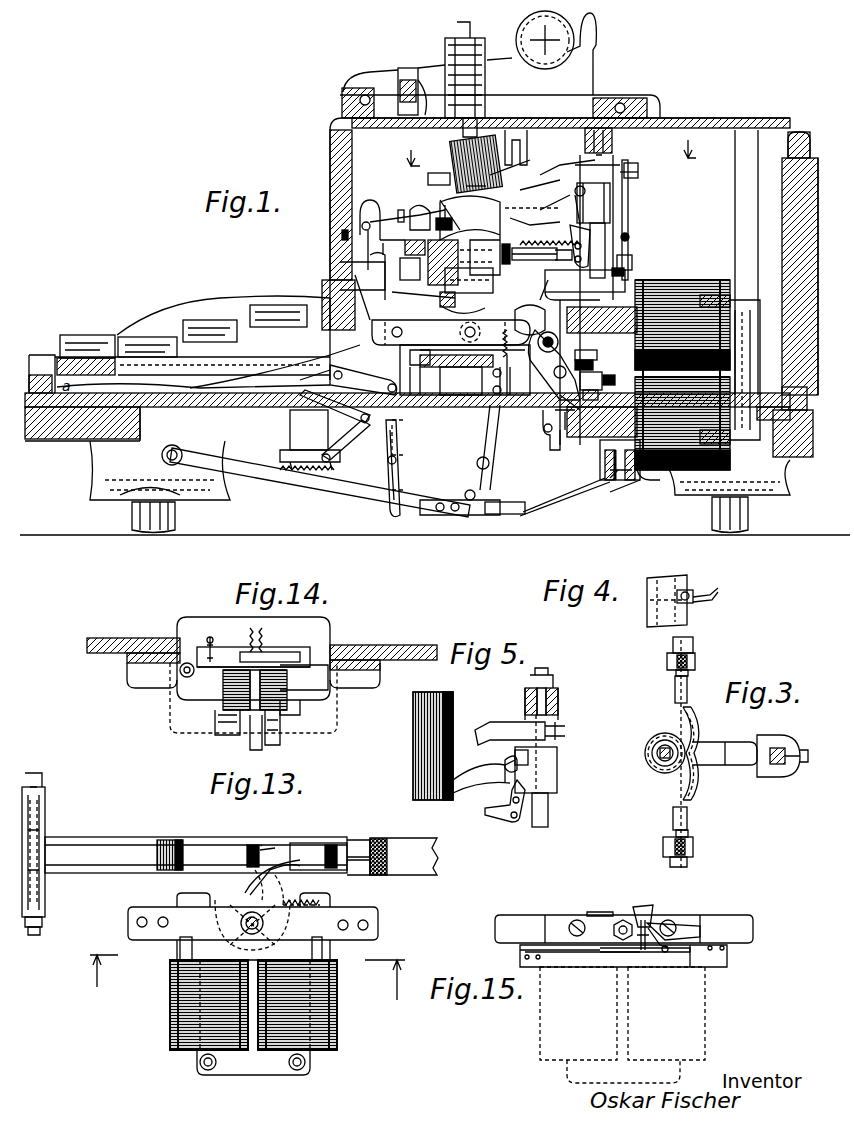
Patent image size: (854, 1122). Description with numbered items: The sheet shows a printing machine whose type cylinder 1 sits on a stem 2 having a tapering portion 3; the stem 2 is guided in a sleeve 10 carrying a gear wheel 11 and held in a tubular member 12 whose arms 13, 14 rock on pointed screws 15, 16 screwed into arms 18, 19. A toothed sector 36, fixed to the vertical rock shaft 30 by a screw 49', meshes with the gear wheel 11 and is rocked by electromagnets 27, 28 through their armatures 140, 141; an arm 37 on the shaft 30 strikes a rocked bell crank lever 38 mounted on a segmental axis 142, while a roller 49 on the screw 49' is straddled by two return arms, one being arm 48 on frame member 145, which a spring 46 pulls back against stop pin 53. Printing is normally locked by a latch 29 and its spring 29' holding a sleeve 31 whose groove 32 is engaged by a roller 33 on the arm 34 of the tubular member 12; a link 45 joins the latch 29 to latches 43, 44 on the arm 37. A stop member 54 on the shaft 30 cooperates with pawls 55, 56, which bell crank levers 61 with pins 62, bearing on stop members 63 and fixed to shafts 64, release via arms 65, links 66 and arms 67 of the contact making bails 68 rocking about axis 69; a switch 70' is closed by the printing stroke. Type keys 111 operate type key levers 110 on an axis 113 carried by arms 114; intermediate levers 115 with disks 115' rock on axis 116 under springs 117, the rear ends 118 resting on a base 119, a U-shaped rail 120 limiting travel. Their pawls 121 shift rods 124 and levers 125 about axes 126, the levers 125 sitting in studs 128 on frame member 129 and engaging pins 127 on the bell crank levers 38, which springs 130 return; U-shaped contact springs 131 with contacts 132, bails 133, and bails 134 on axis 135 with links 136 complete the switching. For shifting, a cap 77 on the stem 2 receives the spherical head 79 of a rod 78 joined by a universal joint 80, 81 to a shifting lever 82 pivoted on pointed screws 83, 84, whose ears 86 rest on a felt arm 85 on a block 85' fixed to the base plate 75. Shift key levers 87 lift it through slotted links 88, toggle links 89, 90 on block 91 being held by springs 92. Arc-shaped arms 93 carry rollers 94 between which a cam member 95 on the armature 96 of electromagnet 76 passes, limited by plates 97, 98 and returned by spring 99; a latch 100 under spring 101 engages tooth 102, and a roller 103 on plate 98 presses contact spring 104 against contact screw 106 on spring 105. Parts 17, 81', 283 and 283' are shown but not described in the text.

In FIG. 1, the setting knob 1 is at (485, 85).
In FIG. 1, the shaft / section line 2 is at (105, 250).
In FIG. 3, the shaft / section line 2 is at (665, 762).
In FIG. 1, the section line 3 is at (551, 150).
In FIG. 1, the sleeve 10 is at (459, 170).
In FIG. 3, the sleeve 10 is at (669, 740).
In FIG. 1, the guide rails / disk 11 is at (748, 287).
In FIG. 3, the guide rails / disk 11 is at (648, 756).
In FIG. 1, the toothed roller 12 is at (456, 152).
In FIG. 5, the toothed roller 12 is at (455, 700).
In FIG. 3, the toothed roller 12 is at (652, 742).
In FIG. 3, the pin 13 is at (675, 694).
In FIG. 13, the pin / section line 14 is at (237, 977).
In FIG. 3, the pin / section line 14 is at (673, 818).
In FIG. 1, the screw 15 is at (510, 173).
In FIG. 3, the screw 15 is at (690, 672).
In FIG. 4, the screw 16 is at (690, 590).
In FIG. 3, the screw 16 is at (690, 836).
In FIG. 1, the sight glass 17 is at (580, 50).
In FIG. 3, the bearing block 18 is at (667, 660).
In FIG. 3, the bearing block 19 is at (663, 848).
In FIG. 1, the electromagnet coil 27 is at (690, 282).
In FIG. 1, the foot bracket 28 is at (650, 478).
In FIG. 1, the lever 29 is at (573, 243).
In FIG. 5, the lever 29 is at (505, 801).
In FIG. 1, the lever arm 29' is at (555, 207).
In FIG. 1, the rod 30 is at (606, 228).
In FIG. 5, the rod 30 is at (548, 816).
In FIG. 3, the rod 30 is at (778, 768).
In FIG. 1, the body 31 is at (611, 192).
In FIG. 5, the body 31 is at (557, 782).
In FIG. 1, the pin 32 is at (575, 190).
In FIG. 5, the pin 32 is at (530, 757).
In FIG. 1, the arm 33 is at (579, 210).
In FIG. 5, the arm 33 is at (510, 772).
In FIG. 1, the arm 34 is at (540, 192).
In FIG. 5, the arm 34 is at (470, 795).
In FIG. 1, the lever 36 is at (547, 172).
In FIG. 5, the lever 36 is at (500, 726).
In FIG. 4, the lever 36 is at (712, 600).
In FIG. 3, the lever 36 is at (706, 768).
In FIG. 1, the link 37 is at (537, 290).
In FIG. 1, the link 38 is at (479, 241).
In FIG. 1, the contact 43 is at (499, 251).
In FIG. 1, the block 44 is at (469, 280).
In FIG. 1, the plunger 45 is at (542, 258).
In FIG. 1, the bolt 46 is at (630, 237).
In FIG. 1, the bar 48 is at (629, 195).
In FIG. 1, the guide 49 is at (643, 165).
In FIG. 1, the guide 49' is at (654, 172).
In FIG. 1, the block 53 is at (633, 266).
In FIG. 1, the contact block 54 is at (600, 388).
In FIG. 1, the contact 55 is at (568, 409).
In FIG. 1, the contact block 56 is at (600, 375).
In FIG. 1, the lever 61 is at (554, 365).
In FIG. 1, the link 62 is at (551, 431).
In FIG. 1, the block 63 is at (580, 365).
In FIG. 1, the pivot 64 is at (541, 333).
In FIG. 1, the frame 65 is at (560, 292).
In FIG. 1, the spring 66 is at (540, 245).
In FIG. 1, the rod 67 is at (366, 250).
In FIG. 1, the bracket 68 is at (363, 276).
In FIG. 1, the housing block 69 is at (340, 290).
In FIG. 1, the bracket 70' is at (525, 152).
In FIG. 1, the base plate 75 is at (206, 410).
In FIG. 14, the base plate 75 is at (400, 650).
In FIG. 13, the electromagnet 76 is at (170, 998).
In FIG. 15, the electromagnet 76 is at (690, 1022).
In FIG. 1, the pivot 77 is at (503, 377).
In FIG. 1, the lever 78 is at (475, 468).
In FIG. 1, the pivot 79 is at (505, 392).
In FIG. 1, the pivot 80 is at (476, 496).
In FIG. 1, the bar 81 is at (460, 519).
In FIG. 1, the pivot 81' is at (498, 468).
In FIG. 1, the bar 82 is at (335, 502).
In FIG. 13, the bar 82 is at (120, 868).
In FIG. 13, the pin 83 is at (45, 780).
In FIG. 1, the pivot 84 is at (162, 458).
In FIG. 13, the pivot 84 is at (42, 928).
In FIG. 1, the rod 85 is at (565, 503).
In FIG. 13, the rod 85 is at (404, 856).
In FIG. 1, the rod end 85' is at (608, 498).
In FIG. 1, the bracket 86 is at (510, 500).
In FIG. 13, the bracket 86 is at (358, 868).
In FIG. 1, the link 87 is at (372, 375).
In FIG. 1, the lever 88 is at (388, 477).
In FIG. 1, the link 89 is at (355, 425).
In FIG. 1, the link 90 is at (358, 448).
In FIG. 1, the block 91 is at (310, 425).
In FIG. 1, the spring 92 is at (300, 476).
In FIG. 1, the pawl 93 is at (400, 485).
In FIG. 13, the pawl 93 is at (250, 845).
In FIG. 1, the pin 94 is at (405, 495).
In FIG. 13, the pin 94 is at (265, 850).
In FIG. 14, the plate 95 is at (300, 650).
In FIG. 13, the plate 95 is at (282, 858).
In FIG. 14, the lever 96 is at (295, 708).
In FIG. 13, the lever 96 is at (240, 890).
In FIG. 14, the contact 97 is at (222, 733).
In FIG. 15, the contact 97 is at (595, 912).
In FIG. 14, the contact 98 is at (282, 730).
In FIG. 15, the contact 98 is at (643, 907).
In FIG. 13, the spring 99 is at (318, 895).
In FIG. 14, the post 100 is at (320, 683).
In FIG. 13, the post 100 is at (324, 950).
In FIG. 14, the post 101 is at (214, 655).
In FIG. 13, the post 101 is at (178, 950).
In FIG. 14, the armature 102 is at (228, 680).
In FIG. 13, the armature 102 is at (222, 915).
In FIG. 14, the contact spring 103 is at (262, 745).
In FIG. 15, the contact spring 103 is at (658, 922).
In FIG. 15, the lever 104 is at (678, 940).
In FIG. 15, the bar 105 is at (565, 948).
In FIG. 15, the bar 106 is at (645, 956).
In FIG. 1, the cable 110 is at (315, 359).
In FIG. 1, the hood 111 is at (255, 318).
In FIG. 1, the bracket 113 is at (403, 348).
In FIG. 1, the block 114 is at (437, 364).
In FIG. 1, the bracket 115 is at (451, 323).
In FIG. 1, the bracket 115' is at (472, 336).
In FIG. 1, the pivot 116 is at (532, 318).
In FIG. 1, the spring 117 is at (505, 340).
In FIG. 1, the block 118 is at (461, 381).
In FIG. 1, the guide 119 is at (410, 375).
In FIG. 1, the cable 120 is at (340, 365).
In FIG. 1, the link 121 is at (392, 297).
In FIG. 1, the pin 124 is at (388, 246).
In FIG. 1, the lever 125 is at (432, 212).
In FIG. 1, the lever 126 is at (408, 216).
In FIG. 1, the block 127 is at (427, 178).
In FIG. 1, the block 128 is at (448, 228).
In FIG. 1, the block 129 is at (417, 271).
In FIG. 1, the frame 130 is at (470, 235).
In FIG. 1, the bracket 131 is at (370, 212).
In FIG. 1, the stop 132 is at (365, 235).
In FIG. 1, the block 133 is at (428, 262).
In FIG. 1, the bar 134 is at (423, 294).
In FIG. 1, the block 135 is at (462, 298).
In FIG. 1, the link 136 is at (463, 307).
In FIG. 1, the core 140 is at (617, 312).
In FIG. 1, the bracket 141 is at (595, 450).
In FIG. 1, the bar 142 is at (532, 214).
In FIG. 1, the plate 145 is at (575, 128).
In FIG. 1, the lug 283 is at (422, 91).
In FIG. 1, the lug 283' is at (397, 113).